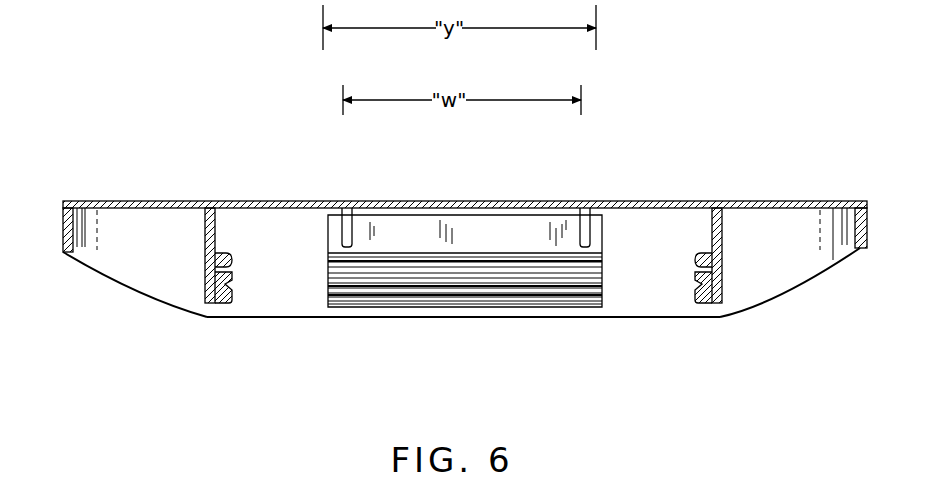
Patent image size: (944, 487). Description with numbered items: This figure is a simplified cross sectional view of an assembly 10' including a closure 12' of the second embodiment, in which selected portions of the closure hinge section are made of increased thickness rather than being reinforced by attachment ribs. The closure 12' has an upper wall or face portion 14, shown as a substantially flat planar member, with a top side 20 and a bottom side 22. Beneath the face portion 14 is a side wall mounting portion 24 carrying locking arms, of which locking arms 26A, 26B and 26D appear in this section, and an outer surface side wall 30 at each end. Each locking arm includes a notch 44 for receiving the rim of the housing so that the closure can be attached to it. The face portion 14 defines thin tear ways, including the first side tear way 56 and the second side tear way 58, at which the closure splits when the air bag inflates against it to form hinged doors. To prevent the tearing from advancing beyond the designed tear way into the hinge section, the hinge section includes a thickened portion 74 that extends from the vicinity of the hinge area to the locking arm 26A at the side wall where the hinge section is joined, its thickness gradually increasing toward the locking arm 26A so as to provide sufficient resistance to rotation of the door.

The assembly 10' is at (465, 221).
The closure 12' is at (463, 319).
The face portion 14 is at (287, 202).
The top side 20 is at (634, 203).
The bottom side 22 is at (380, 203).
The side wall mounting portion 24 is at (205, 232).
The locking arm 26A is at (447, 292).
The locking arm 26B is at (712, 300).
The locking arm 26D is at (210, 305).
The outer surface side wall 30 is at (795, 250).
The notch 44 is at (225, 290).
The first side tear way 56 is at (218, 202).
The second side tear way 58 is at (710, 203).
The thickened portion 74 is at (517, 228).